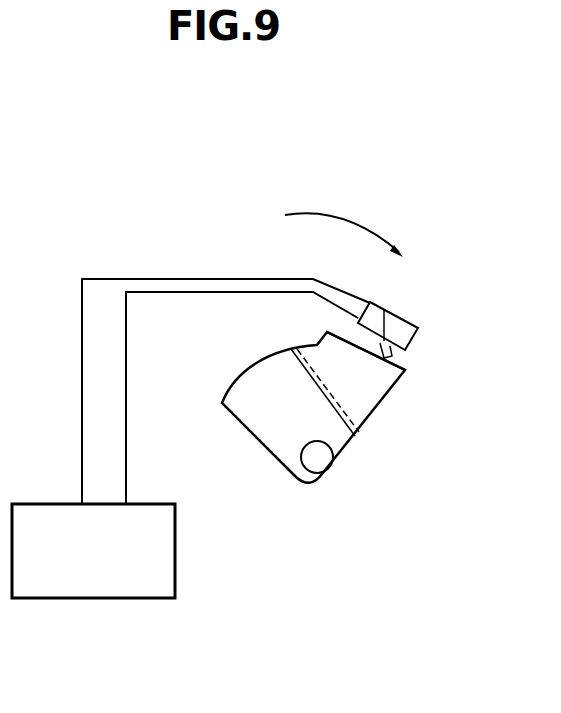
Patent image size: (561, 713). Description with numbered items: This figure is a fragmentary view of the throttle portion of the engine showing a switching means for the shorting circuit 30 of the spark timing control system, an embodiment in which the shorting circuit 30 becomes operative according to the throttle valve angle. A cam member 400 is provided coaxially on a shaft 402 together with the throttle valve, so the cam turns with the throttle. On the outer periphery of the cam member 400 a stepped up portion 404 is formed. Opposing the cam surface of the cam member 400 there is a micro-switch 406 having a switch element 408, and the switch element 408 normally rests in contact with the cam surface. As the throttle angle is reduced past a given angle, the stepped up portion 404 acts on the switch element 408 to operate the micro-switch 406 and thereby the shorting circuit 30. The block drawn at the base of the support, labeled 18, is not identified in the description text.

The shorting circuit 30 is at (112, 268).
The base unit 18 is at (176, 533).
The cam member 400 is at (363, 412).
The shaft 402 is at (316, 462).
The stepped up portion 404 is at (403, 366).
The micro-switch 406 is at (397, 316).
The switch element 408 is at (385, 341).